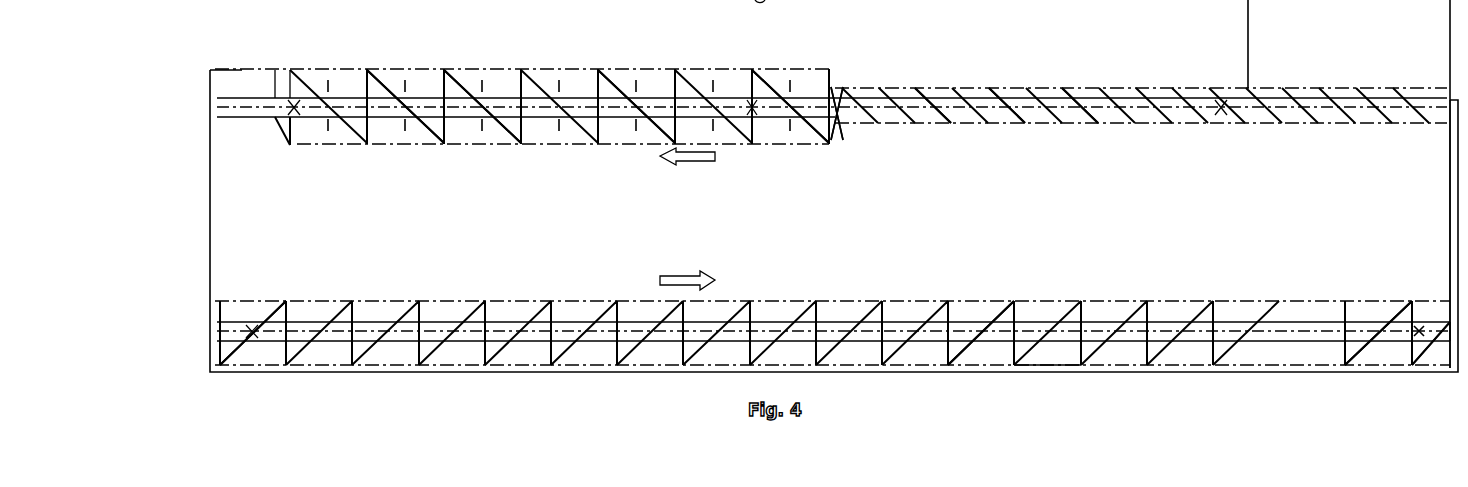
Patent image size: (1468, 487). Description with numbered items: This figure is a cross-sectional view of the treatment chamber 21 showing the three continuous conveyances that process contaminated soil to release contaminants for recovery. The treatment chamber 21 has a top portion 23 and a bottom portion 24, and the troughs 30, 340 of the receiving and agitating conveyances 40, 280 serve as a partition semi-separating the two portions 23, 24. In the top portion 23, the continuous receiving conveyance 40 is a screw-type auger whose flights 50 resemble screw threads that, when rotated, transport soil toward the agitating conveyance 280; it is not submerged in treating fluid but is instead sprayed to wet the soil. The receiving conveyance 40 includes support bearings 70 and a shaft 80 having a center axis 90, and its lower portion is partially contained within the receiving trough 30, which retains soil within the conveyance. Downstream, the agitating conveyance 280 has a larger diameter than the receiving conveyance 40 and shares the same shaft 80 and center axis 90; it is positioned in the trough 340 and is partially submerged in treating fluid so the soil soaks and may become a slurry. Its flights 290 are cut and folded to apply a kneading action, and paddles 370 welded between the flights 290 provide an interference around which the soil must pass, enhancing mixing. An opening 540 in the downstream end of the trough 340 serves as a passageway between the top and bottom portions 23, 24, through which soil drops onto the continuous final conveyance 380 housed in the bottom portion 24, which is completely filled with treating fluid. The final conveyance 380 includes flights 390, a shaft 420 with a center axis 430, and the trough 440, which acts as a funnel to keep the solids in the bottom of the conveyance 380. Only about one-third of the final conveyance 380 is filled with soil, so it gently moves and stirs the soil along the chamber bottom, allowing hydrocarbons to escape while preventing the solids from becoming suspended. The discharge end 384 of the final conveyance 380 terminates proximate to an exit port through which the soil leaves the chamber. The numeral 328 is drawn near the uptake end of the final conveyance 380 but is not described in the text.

The treatment chamber 21 is at (1423, 182).
The top portion 23 is at (791, 107).
The bottom portion 24 is at (793, 311).
The receiving trough 30 is at (1362, 124).
The continuous receiving conveyance 40 is at (1155, 90).
The flights 50 is at (1000, 89).
The support bearings 70 is at (836, 94).
The shaft 80 is at (932, 89).
The center axis 90 is at (1078, 90).
The agitating conveyance 280 is at (607, 92).
The flights 290 is at (395, 90).
The screw end 328 is at (242, 286).
The trough 340 is at (786, 146).
The paddles 370 is at (487, 90).
The continuous final conveyance 380 is at (993, 340).
The discharge end 384 is at (1433, 280).
The flights 390 is at (863, 315).
The shaft 420 is at (1427, 310).
The center axis 430 is at (1413, 333).
The trough 440 is at (1045, 372).
The opening 540 is at (243, 133).